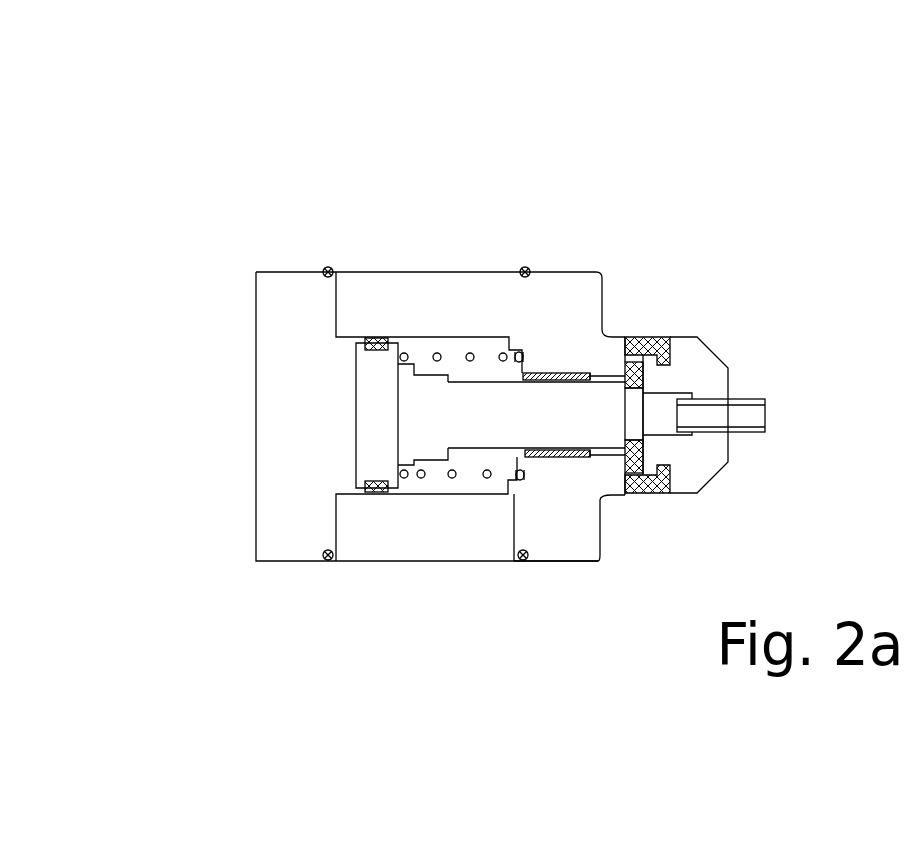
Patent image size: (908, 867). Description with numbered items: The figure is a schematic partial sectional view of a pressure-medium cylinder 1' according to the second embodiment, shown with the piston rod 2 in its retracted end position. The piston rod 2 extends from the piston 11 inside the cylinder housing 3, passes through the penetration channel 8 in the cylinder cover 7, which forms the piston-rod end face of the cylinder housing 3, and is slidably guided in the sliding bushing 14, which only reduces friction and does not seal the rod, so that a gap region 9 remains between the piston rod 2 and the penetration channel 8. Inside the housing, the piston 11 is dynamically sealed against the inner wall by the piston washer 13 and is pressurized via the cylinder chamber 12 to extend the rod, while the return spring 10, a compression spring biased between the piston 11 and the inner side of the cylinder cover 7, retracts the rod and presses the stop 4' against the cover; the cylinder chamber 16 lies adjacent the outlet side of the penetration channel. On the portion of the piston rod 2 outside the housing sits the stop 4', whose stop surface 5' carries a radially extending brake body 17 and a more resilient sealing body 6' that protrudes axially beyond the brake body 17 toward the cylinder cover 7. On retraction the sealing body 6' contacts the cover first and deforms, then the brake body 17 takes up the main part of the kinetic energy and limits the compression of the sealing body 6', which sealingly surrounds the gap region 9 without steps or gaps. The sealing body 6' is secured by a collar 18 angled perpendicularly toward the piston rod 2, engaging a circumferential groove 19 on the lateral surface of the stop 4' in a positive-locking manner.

The pressure-medium cylinder 1' is at (481, 399).
The piston rod 2 is at (493, 425).
The cylinder housing 3 is at (383, 561).
The stop 4' is at (756, 389).
The stop surface 5' is at (739, 478).
The sealing body 6' is at (712, 379).
The cylinder cover 7 is at (583, 533).
The penetration channel 8 is at (607, 375).
The gap region 9 is at (595, 377).
The return spring 10 is at (437, 352).
The piston 11 is at (352, 442).
The cylinder chamber 12 is at (352, 408).
The piston washer 13 is at (375, 338).
The sliding bushing 14 is at (545, 374).
The cylinder chamber 16 is at (432, 483).
The brake body 17 is at (626, 337).
The collar 18 is at (665, 337).
The groove 19 is at (731, 338).